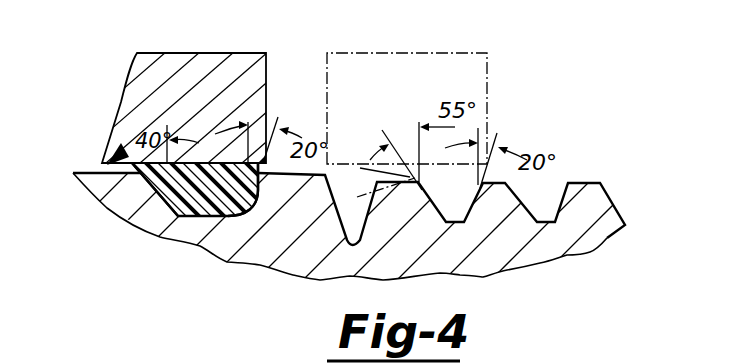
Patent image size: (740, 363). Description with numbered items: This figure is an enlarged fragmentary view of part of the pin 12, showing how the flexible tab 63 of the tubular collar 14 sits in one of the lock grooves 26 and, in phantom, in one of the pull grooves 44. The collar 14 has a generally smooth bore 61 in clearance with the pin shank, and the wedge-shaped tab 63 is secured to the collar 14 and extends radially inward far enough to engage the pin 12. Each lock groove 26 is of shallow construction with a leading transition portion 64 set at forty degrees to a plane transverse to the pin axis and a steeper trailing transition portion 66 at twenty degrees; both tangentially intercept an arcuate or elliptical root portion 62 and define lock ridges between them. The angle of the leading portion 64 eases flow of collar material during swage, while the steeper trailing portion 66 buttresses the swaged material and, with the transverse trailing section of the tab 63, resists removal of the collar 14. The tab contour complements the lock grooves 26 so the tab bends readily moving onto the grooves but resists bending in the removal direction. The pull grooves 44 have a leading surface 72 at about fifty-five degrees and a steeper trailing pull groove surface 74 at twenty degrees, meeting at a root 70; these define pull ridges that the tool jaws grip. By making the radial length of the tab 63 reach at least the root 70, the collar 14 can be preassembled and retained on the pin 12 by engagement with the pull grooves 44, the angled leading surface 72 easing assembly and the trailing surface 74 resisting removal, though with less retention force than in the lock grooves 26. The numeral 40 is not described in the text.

The pin 12 is at (441, 263).
The tubular collar 14 is at (248, 53).
The lock grooves 26 is at (183, 232).
The cutting edge 40 is at (350, 204).
The pull grooves 44 is at (550, 228).
The bore 61 is at (352, 204).
The root portion 62 is at (207, 214).
The flexible tab 63 is at (157, 185).
The leading transition portion 64 is at (150, 182).
The trailing transition portion 66 is at (262, 188).
The root 70 is at (476, 196).
The leading surface 72 is at (438, 196).
The trailing pull groove surface 74 is at (488, 190).